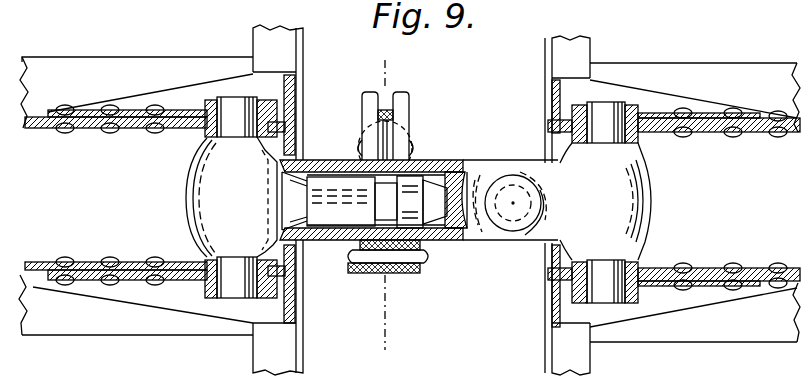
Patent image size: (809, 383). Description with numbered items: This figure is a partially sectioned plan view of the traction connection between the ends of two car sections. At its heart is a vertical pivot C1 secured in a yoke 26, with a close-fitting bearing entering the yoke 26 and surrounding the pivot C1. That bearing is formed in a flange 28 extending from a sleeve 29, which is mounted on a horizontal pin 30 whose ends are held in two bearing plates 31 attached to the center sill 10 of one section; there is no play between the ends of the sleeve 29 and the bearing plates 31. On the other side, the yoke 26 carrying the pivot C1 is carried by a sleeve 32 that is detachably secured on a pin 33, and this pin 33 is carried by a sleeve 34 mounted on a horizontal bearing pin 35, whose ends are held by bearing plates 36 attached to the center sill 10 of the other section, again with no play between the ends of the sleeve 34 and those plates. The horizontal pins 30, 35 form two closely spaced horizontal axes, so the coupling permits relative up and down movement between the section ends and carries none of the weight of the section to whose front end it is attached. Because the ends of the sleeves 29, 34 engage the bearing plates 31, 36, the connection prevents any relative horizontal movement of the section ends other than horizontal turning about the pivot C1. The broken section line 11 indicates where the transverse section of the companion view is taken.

The center sill 10 is at (158, 70).
The section line 11— 11 is at (380, 200).
The yoke 26 is at (477, 240).
The flange 28 is at (545, 244).
The sleeve 29 is at (653, 201).
The horizontal pin 30 is at (616, 105).
The bearing plates 31 is at (765, 132).
The sleeve 32 is at (322, 165).
The pin 33 is at (338, 205).
The sleeve 34 is at (200, 196).
The horizontal bearing pin 35 is at (235, 110).
The bearing plates 36 is at (98, 115).
The vertical pivot C1 is at (513, 190).